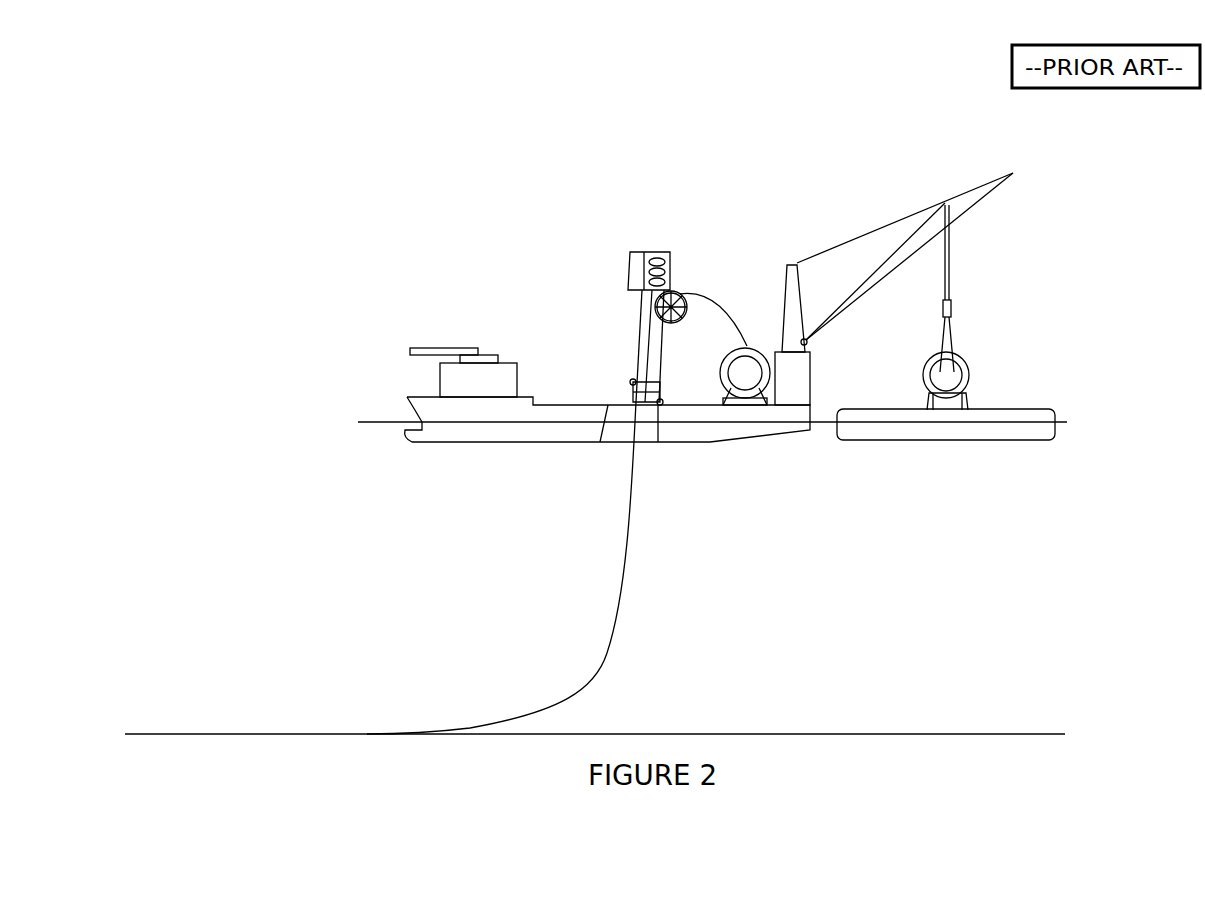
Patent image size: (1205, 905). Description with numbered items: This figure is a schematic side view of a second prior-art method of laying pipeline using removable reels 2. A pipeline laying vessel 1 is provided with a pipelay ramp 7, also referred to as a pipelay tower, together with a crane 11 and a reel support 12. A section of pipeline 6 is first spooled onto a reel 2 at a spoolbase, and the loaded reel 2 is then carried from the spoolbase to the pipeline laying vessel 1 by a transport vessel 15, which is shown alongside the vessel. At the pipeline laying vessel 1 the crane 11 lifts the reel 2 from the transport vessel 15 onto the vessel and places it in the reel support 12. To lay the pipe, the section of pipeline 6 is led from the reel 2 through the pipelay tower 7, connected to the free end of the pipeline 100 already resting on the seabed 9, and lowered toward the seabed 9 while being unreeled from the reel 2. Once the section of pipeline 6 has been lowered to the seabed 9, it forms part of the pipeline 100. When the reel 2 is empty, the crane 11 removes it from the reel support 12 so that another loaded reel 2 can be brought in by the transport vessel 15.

The pipeline laying vessel 1 is at (559, 251).
The pipelay ramp 7 is at (661, 247).
The reel 2 is at (749, 345).
The section of pipeline 6 is at (701, 297).
The pipeline 100 is at (606, 657).
The reel support 12 is at (745, 407).
The crane 11 is at (796, 262).
The transport vessel 15 is at (1020, 412).
The seabed 9 is at (877, 733).